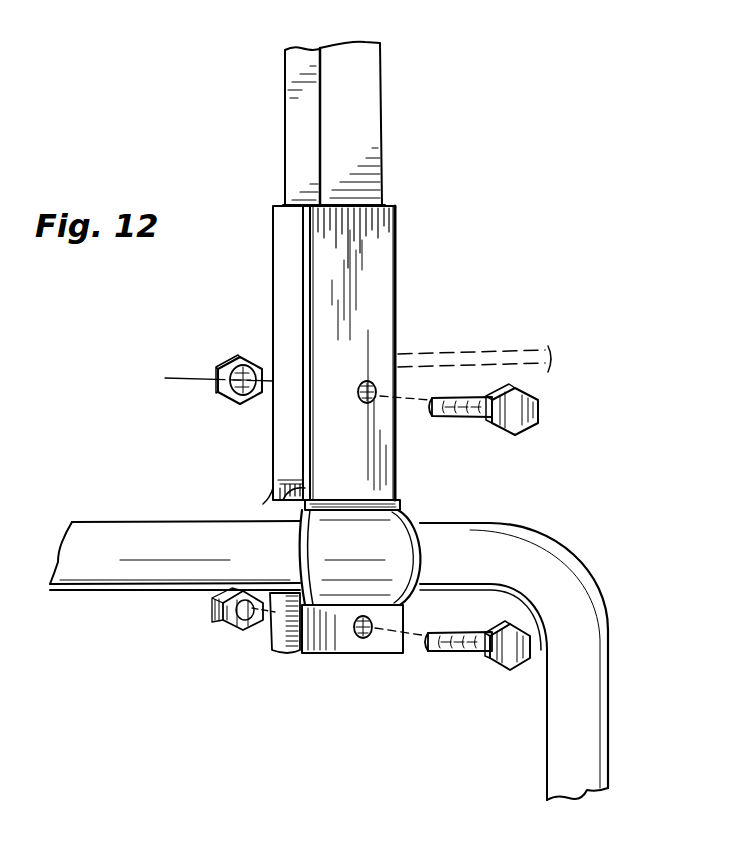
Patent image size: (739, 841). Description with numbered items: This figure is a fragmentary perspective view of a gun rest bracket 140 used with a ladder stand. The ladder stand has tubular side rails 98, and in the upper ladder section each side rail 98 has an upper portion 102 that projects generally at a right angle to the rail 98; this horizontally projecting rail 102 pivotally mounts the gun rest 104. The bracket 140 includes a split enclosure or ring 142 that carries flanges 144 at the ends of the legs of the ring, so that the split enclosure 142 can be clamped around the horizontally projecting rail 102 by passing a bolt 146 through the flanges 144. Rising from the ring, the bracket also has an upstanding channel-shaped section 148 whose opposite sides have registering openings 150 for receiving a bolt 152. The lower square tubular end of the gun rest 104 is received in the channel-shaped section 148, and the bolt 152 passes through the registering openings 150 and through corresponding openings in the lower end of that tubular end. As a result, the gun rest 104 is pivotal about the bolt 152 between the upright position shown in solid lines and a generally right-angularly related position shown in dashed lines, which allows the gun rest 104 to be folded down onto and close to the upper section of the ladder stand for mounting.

The tubular side rail 98 is at (598, 729).
The upper portion of side rail 102 is at (95, 594).
The gun rest 104 is at (382, 98).
The gun rest bracket 140 is at (395, 315).
The split enclosure 142 is at (410, 525).
The flange 144 is at (370, 652).
The bolt 146 is at (462, 655).
The channel-shaped section 148 is at (273, 313).
The registering openings 150 is at (368, 403).
The bolt 152 is at (530, 431).